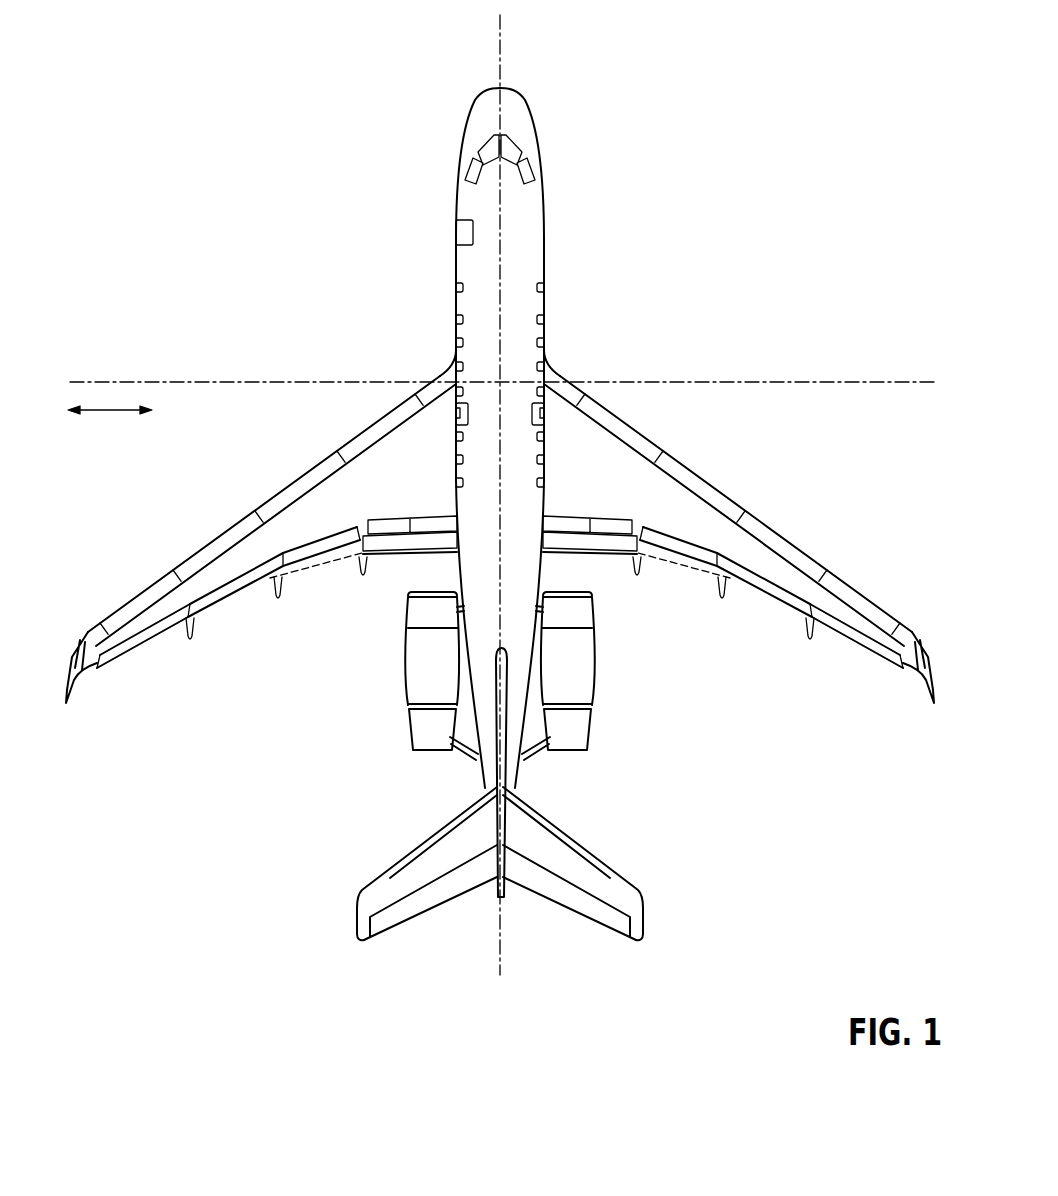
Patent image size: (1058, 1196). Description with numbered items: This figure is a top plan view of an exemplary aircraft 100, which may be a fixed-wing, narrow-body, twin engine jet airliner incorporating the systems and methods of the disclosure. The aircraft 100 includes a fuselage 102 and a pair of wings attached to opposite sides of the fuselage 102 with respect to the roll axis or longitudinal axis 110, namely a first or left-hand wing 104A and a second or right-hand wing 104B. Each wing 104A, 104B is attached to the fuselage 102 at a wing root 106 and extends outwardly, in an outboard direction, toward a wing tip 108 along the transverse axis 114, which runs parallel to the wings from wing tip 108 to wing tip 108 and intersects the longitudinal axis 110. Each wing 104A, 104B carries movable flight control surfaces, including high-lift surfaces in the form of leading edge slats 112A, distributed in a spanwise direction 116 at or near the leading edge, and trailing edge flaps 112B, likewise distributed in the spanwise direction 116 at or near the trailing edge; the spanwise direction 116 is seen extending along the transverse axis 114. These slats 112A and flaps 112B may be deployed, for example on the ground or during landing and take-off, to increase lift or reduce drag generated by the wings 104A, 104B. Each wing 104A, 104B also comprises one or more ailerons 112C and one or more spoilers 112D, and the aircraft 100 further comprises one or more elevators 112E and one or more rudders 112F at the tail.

The aircraft 100 is at (240, 93).
The fuselage 102 is at (456, 268).
The first wing 104A is at (195, 505).
The second wing 104B is at (838, 490).
The wing root 106 is at (436, 352).
The wing tip 108 is at (60, 638).
The longitudinal axis 110 is at (508, 52).
The leading edge slats 112A is at (292, 482).
The trailing edge flaps 112B is at (395, 542).
The ailerons 112C is at (168, 628).
The spoilers 112D is at (333, 540).
The elevators 112E is at (441, 895).
The rudders 112F is at (511, 890).
The transverse axis 114 is at (857, 382).
The spanwise direction 116 is at (105, 412).